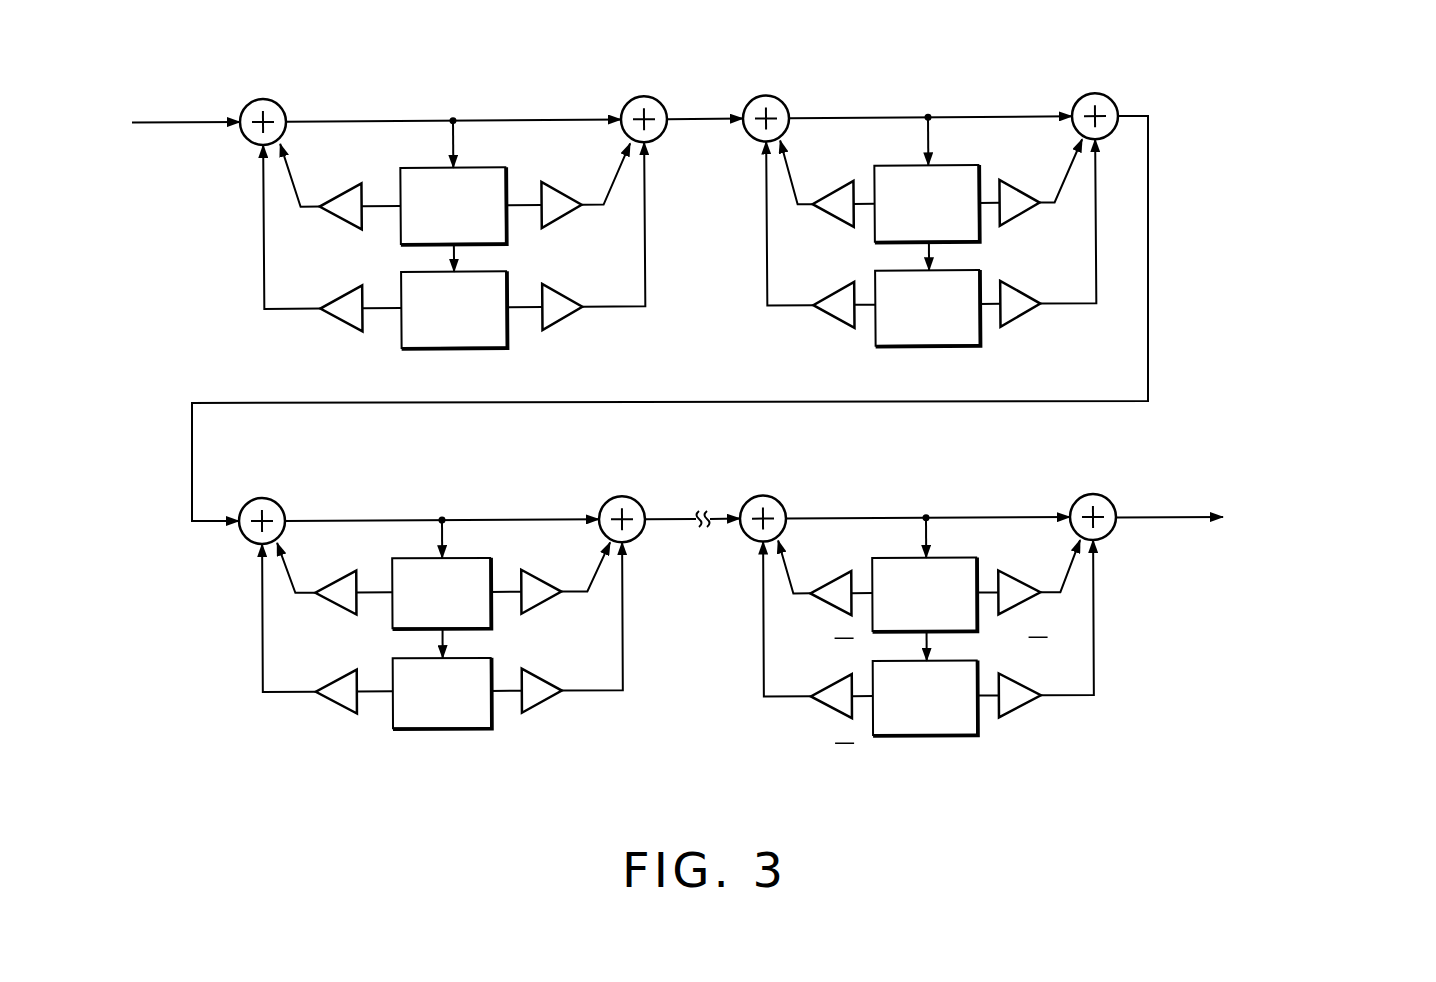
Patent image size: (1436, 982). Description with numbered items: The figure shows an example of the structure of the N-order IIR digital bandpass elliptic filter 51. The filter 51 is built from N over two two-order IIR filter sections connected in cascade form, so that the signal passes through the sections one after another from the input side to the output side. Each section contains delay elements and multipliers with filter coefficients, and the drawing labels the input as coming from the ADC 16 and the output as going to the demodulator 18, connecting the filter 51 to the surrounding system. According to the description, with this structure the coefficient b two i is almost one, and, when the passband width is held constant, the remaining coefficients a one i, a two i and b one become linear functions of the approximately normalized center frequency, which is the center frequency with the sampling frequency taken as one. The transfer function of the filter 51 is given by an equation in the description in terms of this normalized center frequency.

The N-order IIR digital bandpass elliptic filter 51 is at (720, 791).
The ADC 16 is at (163, 78).
The demodulator 18 is at (1268, 474).